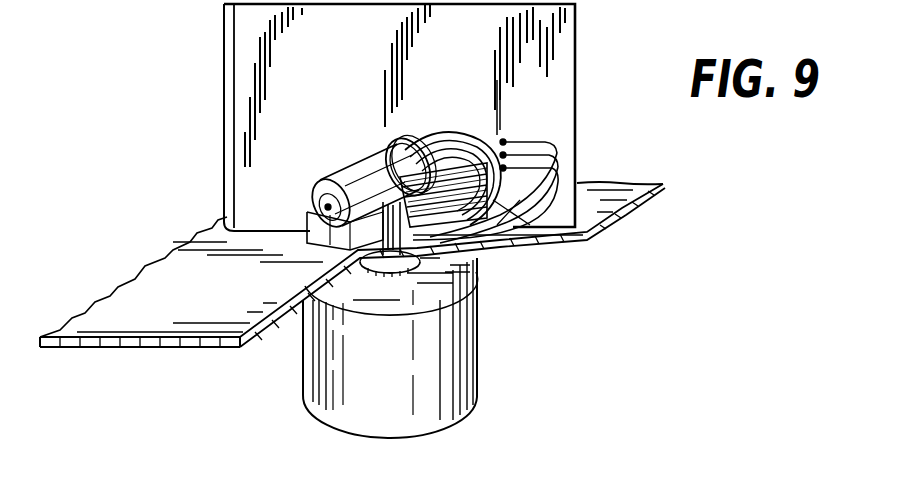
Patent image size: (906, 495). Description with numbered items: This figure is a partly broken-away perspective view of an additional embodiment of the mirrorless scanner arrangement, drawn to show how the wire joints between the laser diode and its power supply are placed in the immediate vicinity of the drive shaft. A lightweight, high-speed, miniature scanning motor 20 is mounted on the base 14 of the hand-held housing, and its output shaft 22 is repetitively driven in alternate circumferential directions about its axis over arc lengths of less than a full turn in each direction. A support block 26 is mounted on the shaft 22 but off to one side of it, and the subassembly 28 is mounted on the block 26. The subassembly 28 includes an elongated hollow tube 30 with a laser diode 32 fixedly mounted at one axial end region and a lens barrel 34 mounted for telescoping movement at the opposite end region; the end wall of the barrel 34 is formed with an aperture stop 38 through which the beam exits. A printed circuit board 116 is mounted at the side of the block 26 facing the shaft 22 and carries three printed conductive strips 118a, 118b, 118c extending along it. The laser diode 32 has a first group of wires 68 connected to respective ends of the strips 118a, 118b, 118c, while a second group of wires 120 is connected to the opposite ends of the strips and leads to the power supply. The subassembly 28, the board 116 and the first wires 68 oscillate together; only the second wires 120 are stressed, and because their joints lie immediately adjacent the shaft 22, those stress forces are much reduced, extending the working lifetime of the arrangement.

The base 14 is at (664, 186).
The scanning motor 20 is at (468, 347).
The output shaft 22 is at (390, 264).
The support block 26 is at (323, 210).
The subassembly 28 is at (363, 153).
The elongated hollow tube 30 is at (365, 167).
The laser diode 32 is at (397, 140).
The lens barrel 34 is at (328, 184).
The aperture stop 38 is at (326, 206).
The first group of wires 68 is at (466, 139).
The printed circuit board 116 is at (450, 148).
The printed conductive strip 118a is at (504, 140).
The printed conductive strip 118b is at (490, 146).
The printed conductive strip 118c is at (512, 213).
The second group of wires 120 is at (563, 150).